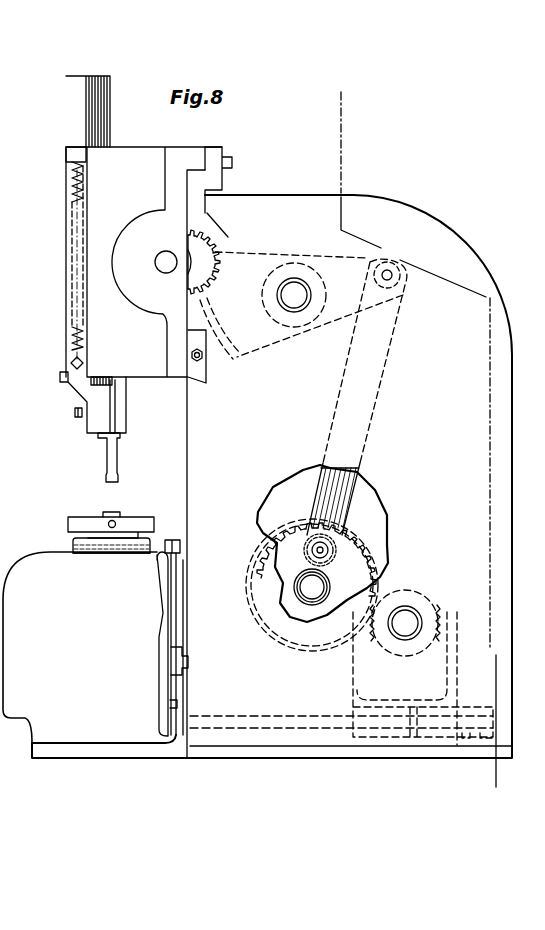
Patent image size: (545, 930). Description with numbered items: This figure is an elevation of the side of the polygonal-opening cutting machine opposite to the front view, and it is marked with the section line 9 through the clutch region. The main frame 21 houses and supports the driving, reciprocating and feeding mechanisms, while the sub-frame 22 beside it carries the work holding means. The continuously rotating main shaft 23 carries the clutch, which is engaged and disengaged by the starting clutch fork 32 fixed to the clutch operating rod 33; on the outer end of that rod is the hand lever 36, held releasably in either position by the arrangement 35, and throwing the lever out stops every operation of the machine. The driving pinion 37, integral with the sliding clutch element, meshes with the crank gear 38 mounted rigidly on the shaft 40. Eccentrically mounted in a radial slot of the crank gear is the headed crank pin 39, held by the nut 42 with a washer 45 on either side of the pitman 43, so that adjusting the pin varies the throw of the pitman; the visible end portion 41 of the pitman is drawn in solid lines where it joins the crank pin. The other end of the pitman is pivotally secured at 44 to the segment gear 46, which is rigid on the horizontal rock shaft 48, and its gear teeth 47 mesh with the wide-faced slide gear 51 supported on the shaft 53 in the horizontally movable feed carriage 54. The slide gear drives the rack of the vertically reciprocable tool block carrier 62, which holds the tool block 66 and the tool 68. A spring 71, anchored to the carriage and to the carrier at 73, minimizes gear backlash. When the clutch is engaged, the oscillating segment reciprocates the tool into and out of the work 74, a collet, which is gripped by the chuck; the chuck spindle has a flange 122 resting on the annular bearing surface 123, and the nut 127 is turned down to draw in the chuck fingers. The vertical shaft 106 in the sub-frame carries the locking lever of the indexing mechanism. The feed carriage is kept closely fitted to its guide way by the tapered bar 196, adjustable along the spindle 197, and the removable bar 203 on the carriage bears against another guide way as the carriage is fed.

The section line 9- 9 is at (423, 91).
The main frame 21 is at (258, 737).
The sub-frame 22 is at (40, 712).
The main shaft 23 is at (408, 640).
The starting clutch fork 32 is at (453, 672).
The clutch operating rod 33 is at (292, 718).
The arrangement for maintaining the hand lever 35 is at (188, 661).
The hand lever 36 is at (160, 682).
The driving pinion 37 is at (425, 607).
The crank gear 38 is at (277, 643).
The crank pin 39 is at (305, 552).
The shaft 40 is at (309, 586).
The connecting rod 41 is at (337, 532).
The nut 42 is at (333, 555).
The pitman 43 is at (376, 413).
The pivot 44 is at (390, 271).
The washer 45 is at (312, 552).
The segment gear 46 is at (286, 343).
The gear teeth 47 is at (212, 270).
The rock shaft 48 is at (296, 284).
The slide gear 51 is at (186, 238).
The shaft 53 is at (162, 258).
The feed carriage 54 is at (144, 266).
The tool block carrier 62 is at (70, 96).
The tool block 66 is at (86, 404).
The tool 68 is at (118, 456).
The spring 71 is at (73, 198).
The spring attachment point 73 is at (84, 363).
The work 74 is at (118, 513).
The vertical shaft 106 is at (181, 546).
The flange 122 is at (78, 542).
The annular bearing surface 123 is at (110, 550).
The nut 127 is at (74, 522).
The tapered bar 196 is at (192, 338).
The spindle 197 is at (208, 358).
The bar 203 is at (220, 150).